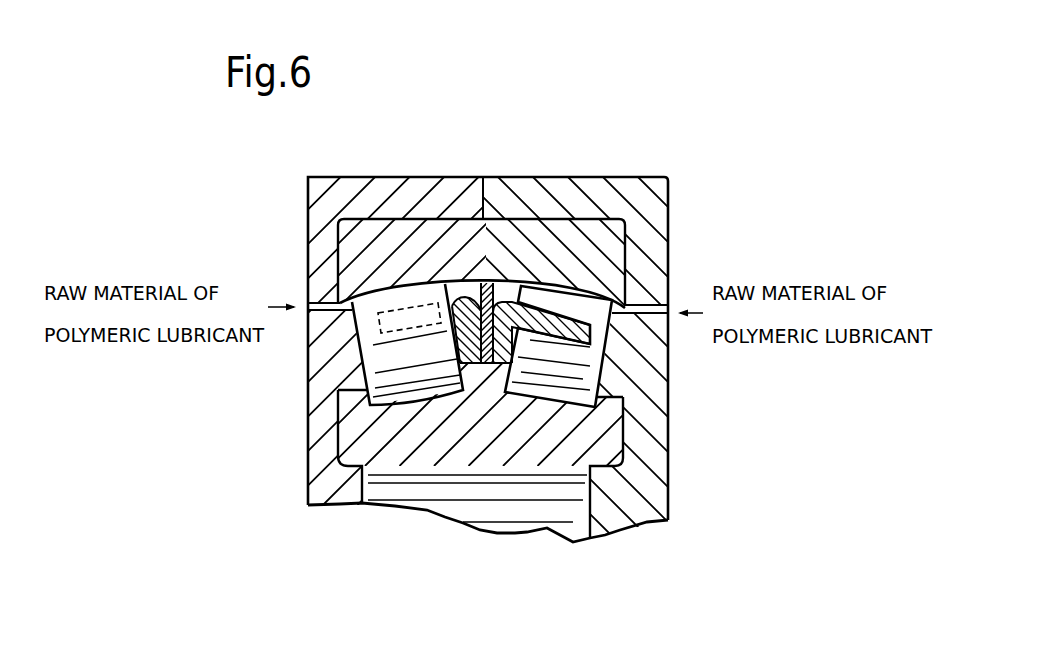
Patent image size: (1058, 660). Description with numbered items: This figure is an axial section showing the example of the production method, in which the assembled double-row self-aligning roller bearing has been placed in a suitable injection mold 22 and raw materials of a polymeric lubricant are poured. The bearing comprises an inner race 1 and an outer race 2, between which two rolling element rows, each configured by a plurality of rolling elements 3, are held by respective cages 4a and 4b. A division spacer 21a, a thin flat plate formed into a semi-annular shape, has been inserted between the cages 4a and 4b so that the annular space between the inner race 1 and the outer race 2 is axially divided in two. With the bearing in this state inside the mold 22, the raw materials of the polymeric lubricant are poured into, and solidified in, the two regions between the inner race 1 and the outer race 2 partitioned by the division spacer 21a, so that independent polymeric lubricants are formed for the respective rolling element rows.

The inner race 1 is at (473, 453).
The outer race 2 is at (587, 250).
The rolling element 3 is at (400, 297).
The cage 4a is at (540, 317).
The cage 4b is at (463, 293).
The division spacer 21a is at (501, 283).
The mold 22 is at (345, 194).